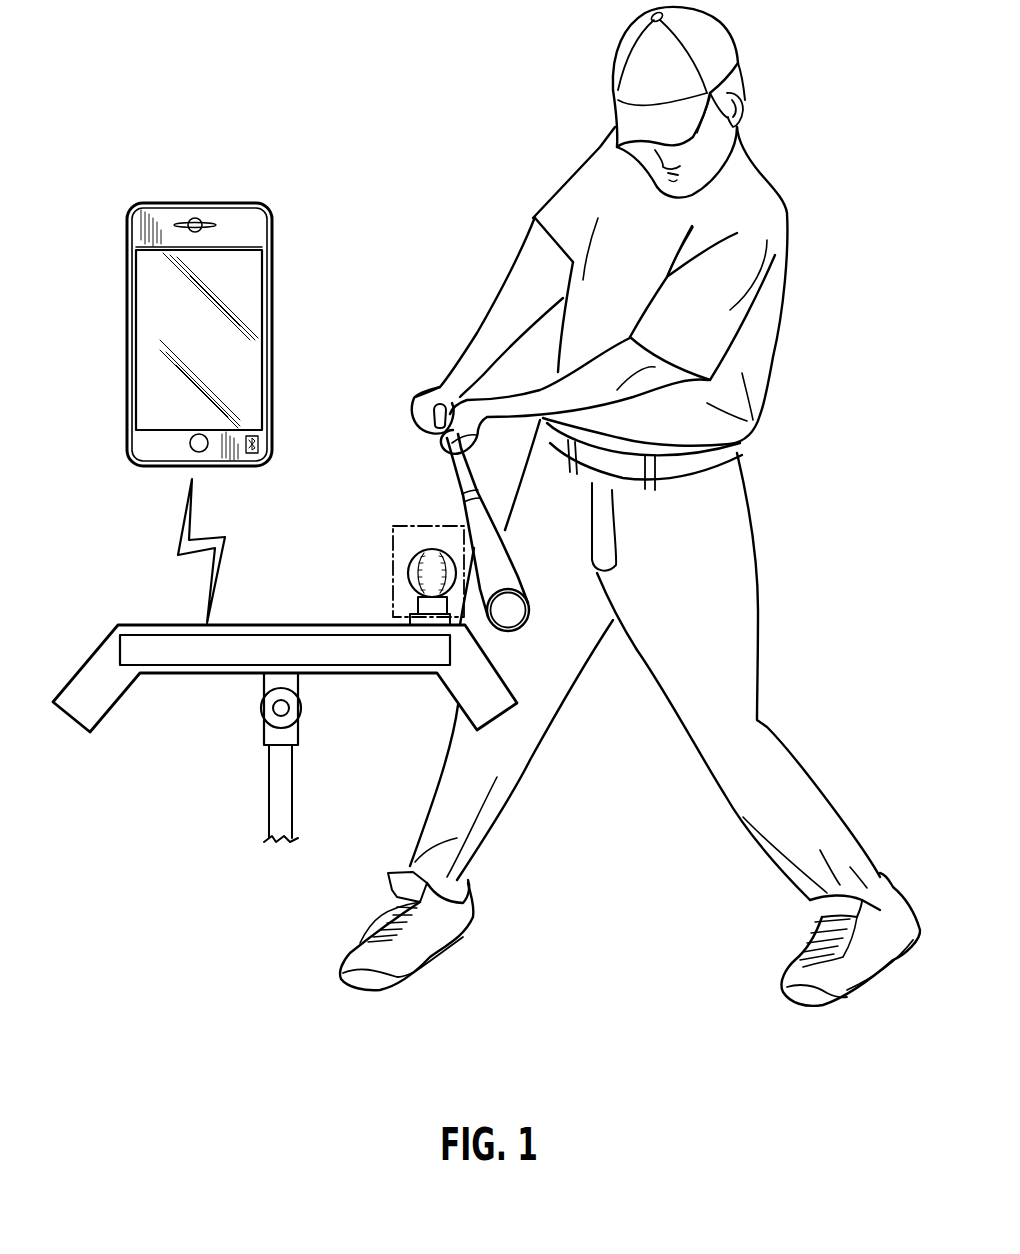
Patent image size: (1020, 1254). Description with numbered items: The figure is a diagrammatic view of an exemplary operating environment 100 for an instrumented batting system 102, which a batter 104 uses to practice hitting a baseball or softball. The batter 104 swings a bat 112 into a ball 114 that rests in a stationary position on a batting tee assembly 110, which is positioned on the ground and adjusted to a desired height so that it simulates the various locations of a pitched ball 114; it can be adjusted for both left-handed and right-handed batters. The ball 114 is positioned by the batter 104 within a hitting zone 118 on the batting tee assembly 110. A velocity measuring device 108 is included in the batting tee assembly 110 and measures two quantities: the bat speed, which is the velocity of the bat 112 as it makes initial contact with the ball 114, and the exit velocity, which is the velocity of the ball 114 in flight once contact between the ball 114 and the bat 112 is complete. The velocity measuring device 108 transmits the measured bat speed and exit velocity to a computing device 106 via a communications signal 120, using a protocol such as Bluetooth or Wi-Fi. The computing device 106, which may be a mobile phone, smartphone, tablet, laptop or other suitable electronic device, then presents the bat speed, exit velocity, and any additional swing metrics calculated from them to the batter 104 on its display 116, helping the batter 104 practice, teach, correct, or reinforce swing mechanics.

The operating environment 100 is at (378, 125).
The instrumented batting system 102 is at (93, 453).
The batter 104 is at (789, 216).
The computing device 106 is at (272, 228).
The velocity measuring device 108 is at (158, 633).
The batting tee assembly 110 is at (190, 676).
The bat 112 is at (461, 477).
The ball 114 is at (410, 575).
The display 116 is at (216, 345).
The hitting zone 118 is at (393, 534).
The communications signal 120 is at (180, 535).